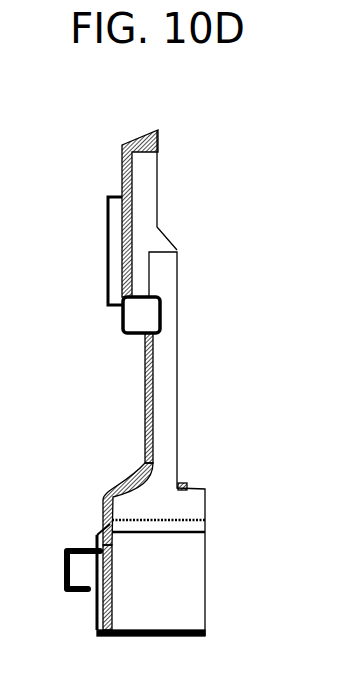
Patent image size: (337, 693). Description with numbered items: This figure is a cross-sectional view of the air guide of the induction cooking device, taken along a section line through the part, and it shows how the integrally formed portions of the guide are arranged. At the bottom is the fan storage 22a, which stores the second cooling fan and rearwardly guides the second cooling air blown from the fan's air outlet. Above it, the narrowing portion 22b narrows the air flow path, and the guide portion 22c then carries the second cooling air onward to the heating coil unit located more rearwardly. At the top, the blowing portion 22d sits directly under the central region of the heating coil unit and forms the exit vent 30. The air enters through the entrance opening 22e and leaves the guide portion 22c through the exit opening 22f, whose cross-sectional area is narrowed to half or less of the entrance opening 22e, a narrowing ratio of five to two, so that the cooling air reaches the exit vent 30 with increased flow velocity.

The exit vent 30 is at (108, 229).
The fan storage 22a is at (177, 568).
The narrowing portion 22b is at (175, 504).
The guide portion 22c is at (163, 372).
The blowing portion 22d is at (143, 188).
The entrance opening 22e is at (160, 517).
The exit opening 22f is at (170, 302).